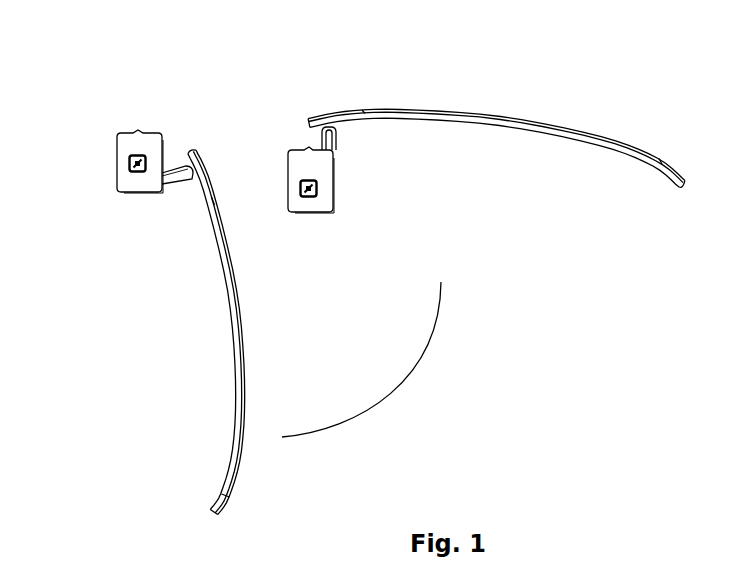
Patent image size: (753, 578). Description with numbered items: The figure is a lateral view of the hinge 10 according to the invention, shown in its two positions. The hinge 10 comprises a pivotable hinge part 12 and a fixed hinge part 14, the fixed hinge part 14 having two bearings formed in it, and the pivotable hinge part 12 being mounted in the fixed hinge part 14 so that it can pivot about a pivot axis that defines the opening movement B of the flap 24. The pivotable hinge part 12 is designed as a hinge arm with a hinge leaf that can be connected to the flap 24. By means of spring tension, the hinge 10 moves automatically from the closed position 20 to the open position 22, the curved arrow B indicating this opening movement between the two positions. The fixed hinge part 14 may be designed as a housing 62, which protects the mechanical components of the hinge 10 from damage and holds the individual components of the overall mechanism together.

The hinge 10 is at (65, 41).
The pivotable hinge part 12 is at (352, 131).
The fixed hinge part 14 is at (327, 192).
The closed position 20 is at (273, 456).
The open position 22 is at (442, 264).
The flap 24 is at (228, 363).
The housing 62 is at (98, 173).